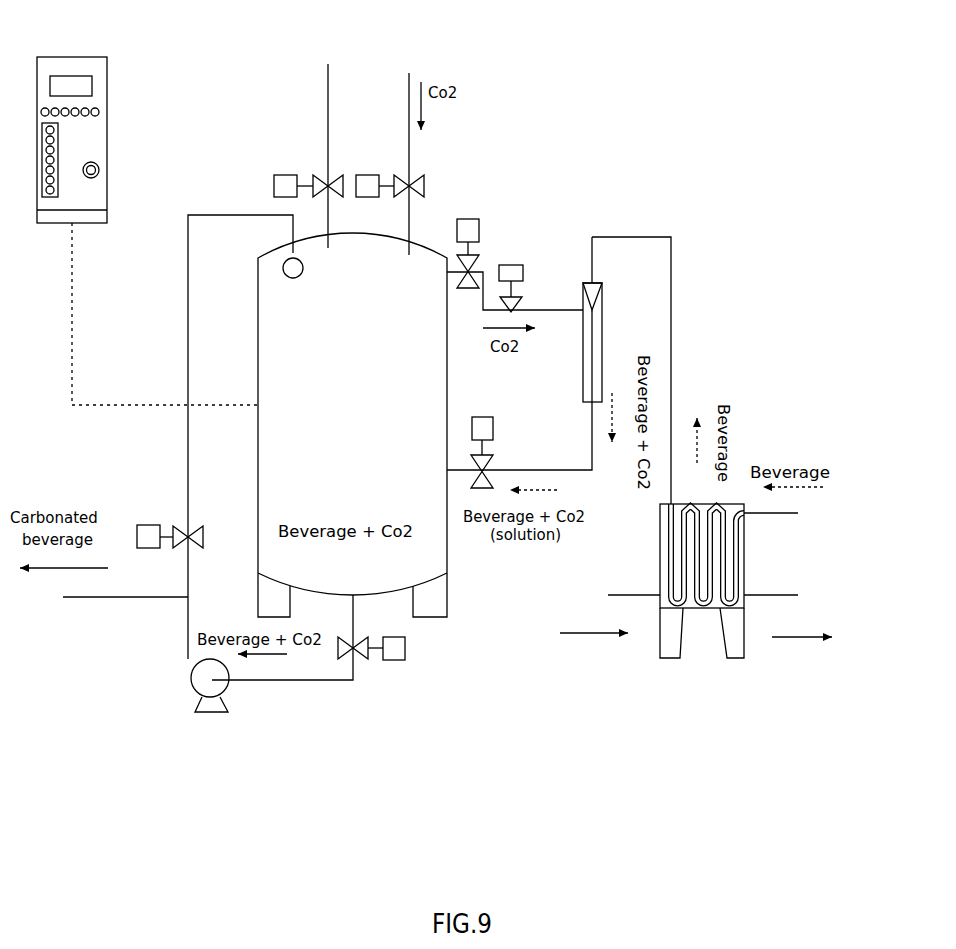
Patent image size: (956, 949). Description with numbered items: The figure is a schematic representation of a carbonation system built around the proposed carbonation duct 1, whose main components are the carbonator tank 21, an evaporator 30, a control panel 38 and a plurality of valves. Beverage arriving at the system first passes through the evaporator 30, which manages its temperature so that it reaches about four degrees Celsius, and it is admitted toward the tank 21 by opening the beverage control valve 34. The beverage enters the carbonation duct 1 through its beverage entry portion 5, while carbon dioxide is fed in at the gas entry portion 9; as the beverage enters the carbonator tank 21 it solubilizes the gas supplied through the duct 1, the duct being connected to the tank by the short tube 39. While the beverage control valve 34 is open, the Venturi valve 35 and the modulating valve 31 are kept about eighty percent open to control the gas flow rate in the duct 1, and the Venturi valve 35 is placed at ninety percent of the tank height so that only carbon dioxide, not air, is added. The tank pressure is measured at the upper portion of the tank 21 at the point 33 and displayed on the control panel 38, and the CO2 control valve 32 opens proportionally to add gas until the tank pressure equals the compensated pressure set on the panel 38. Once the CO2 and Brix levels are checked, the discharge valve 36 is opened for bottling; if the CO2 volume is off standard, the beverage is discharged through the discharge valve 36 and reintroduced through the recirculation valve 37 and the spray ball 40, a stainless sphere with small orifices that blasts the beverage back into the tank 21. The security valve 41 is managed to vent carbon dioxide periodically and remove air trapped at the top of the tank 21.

The carbonation duct 1 is at (608, 328).
The beverage entry portion 5 is at (584, 270).
The gas entry portion 9 is at (578, 320).
The carbonator tank 21 is at (352, 425).
The evaporator 30 is at (757, 563).
The modulating valve 31 is at (512, 262).
The CO2 control valve 32 is at (438, 168).
The pressure measurement point 33 is at (412, 247).
The beverage control valve 34 is at (500, 440).
The Venturi valve 35 is at (487, 205).
The discharge valve 36 is at (410, 668).
The recirculation valve 37 is at (133, 507).
The control panel 38 is at (75, 138).
The tube connecting the tank to the duct 39 is at (563, 472).
The spray ball 40 is at (278, 253).
The security valve 41 is at (291, 170).